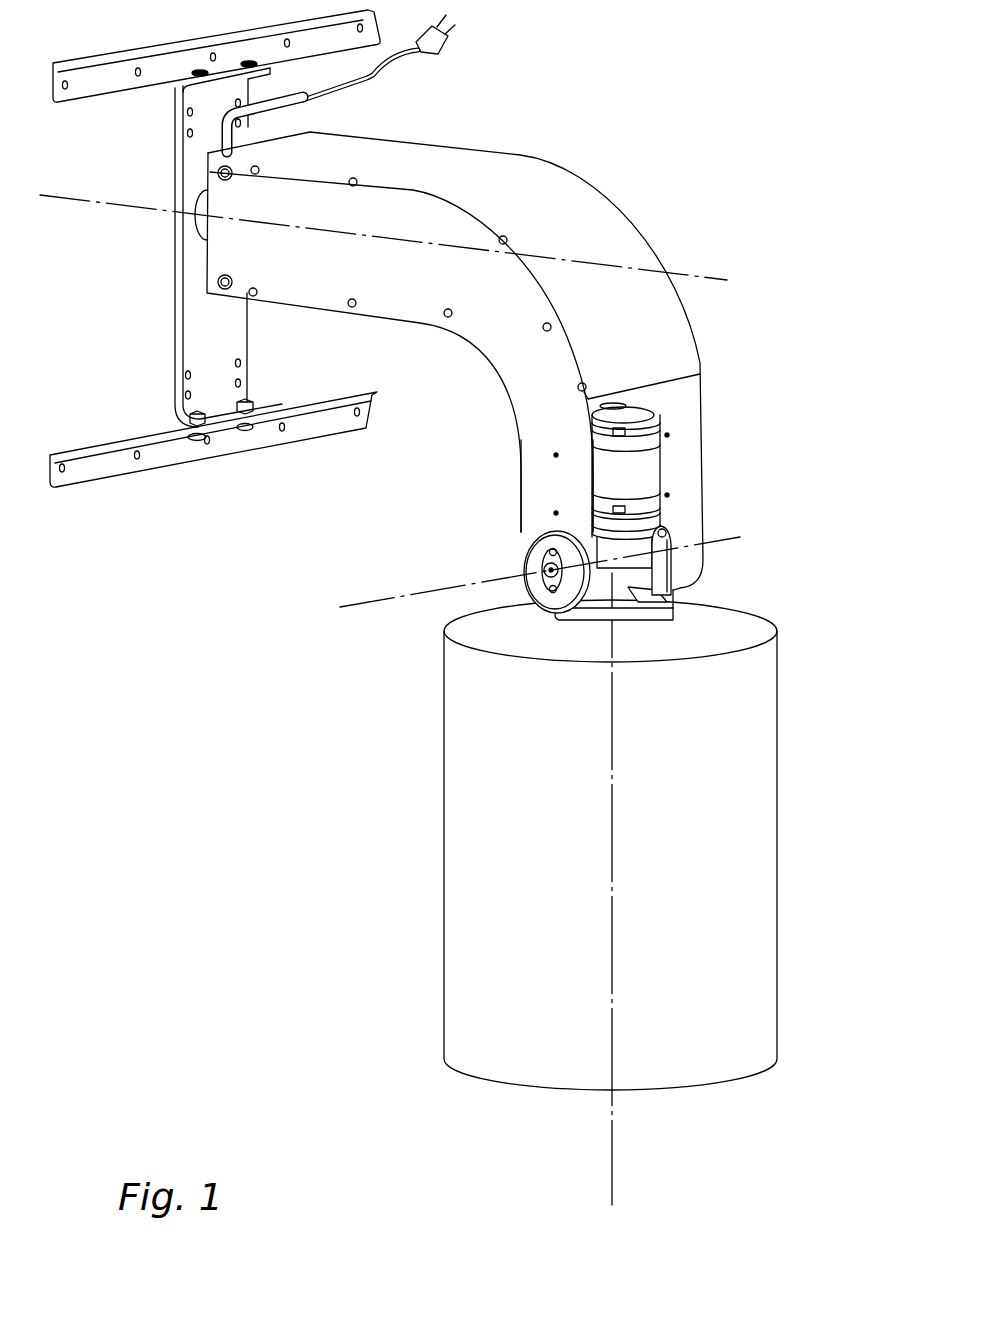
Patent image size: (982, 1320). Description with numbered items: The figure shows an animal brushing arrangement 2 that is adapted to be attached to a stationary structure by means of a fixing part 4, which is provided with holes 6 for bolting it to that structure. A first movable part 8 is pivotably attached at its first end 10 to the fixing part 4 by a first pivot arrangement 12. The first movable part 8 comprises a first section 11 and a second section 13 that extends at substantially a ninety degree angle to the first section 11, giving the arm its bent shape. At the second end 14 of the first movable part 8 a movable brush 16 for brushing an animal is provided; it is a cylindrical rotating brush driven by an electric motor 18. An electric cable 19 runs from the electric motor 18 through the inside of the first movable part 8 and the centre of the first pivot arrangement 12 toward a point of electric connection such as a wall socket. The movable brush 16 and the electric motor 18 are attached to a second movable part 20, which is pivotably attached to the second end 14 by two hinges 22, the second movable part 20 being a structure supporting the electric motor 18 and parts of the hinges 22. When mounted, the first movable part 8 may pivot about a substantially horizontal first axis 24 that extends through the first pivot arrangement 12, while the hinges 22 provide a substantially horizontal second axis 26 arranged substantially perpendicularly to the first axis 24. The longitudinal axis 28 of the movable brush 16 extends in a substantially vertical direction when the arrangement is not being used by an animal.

The animal brushing arrangement 2 is at (707, 104).
The fixing part 4 is at (202, 303).
The holes 6 is at (187, 372).
The first movable part 8 is at (491, 177).
The first end 10 is at (260, 335).
The first section 11 is at (330, 268).
The first pivot arrangement 12 is at (200, 225).
The second section 13 is at (548, 477).
The second end 14 is at (770, 521).
The movable brush 16 is at (405, 871).
The electric motor 18 is at (638, 468).
The electric cable 19 is at (370, 82).
The second movable part 20 is at (673, 598).
The hinges 22 is at (537, 566).
The first axis 24 is at (70, 196).
The second axis 26 is at (342, 605).
The longitudinal axis 28 is at (611, 1168).